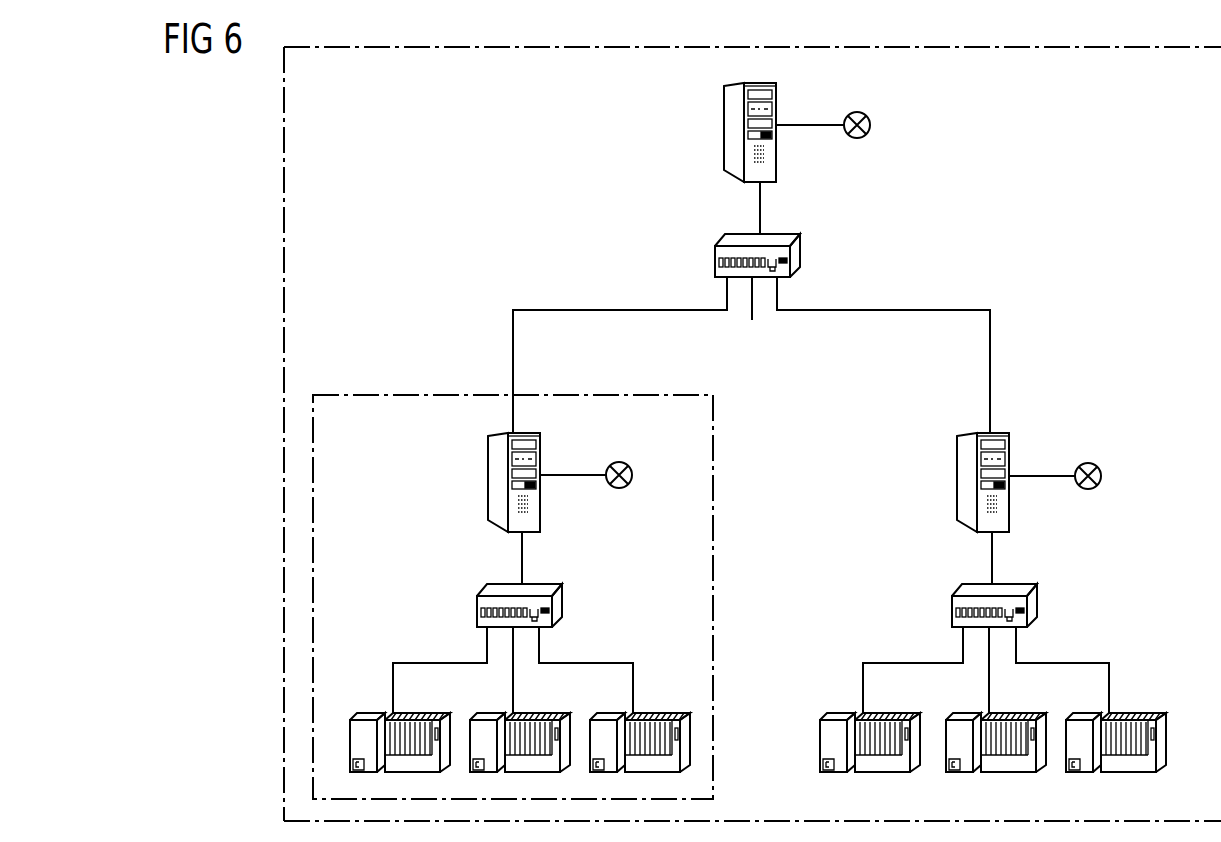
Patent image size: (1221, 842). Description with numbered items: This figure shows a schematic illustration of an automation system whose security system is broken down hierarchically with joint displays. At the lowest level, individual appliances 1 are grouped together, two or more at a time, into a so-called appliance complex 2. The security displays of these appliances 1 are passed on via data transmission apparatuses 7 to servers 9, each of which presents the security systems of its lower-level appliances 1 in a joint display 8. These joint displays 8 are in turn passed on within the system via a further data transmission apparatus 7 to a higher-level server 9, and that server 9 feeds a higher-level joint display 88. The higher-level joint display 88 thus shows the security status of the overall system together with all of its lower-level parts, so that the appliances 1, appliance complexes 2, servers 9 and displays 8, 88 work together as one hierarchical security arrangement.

The appliance 1 is at (371, 713).
The appliance complex 2 is at (284, 273).
The data transmission apparatus 7 is at (938, 310).
The joint display 8 is at (632, 481).
The higher-level joint display 88 is at (870, 131).
The server 9 is at (724, 136).